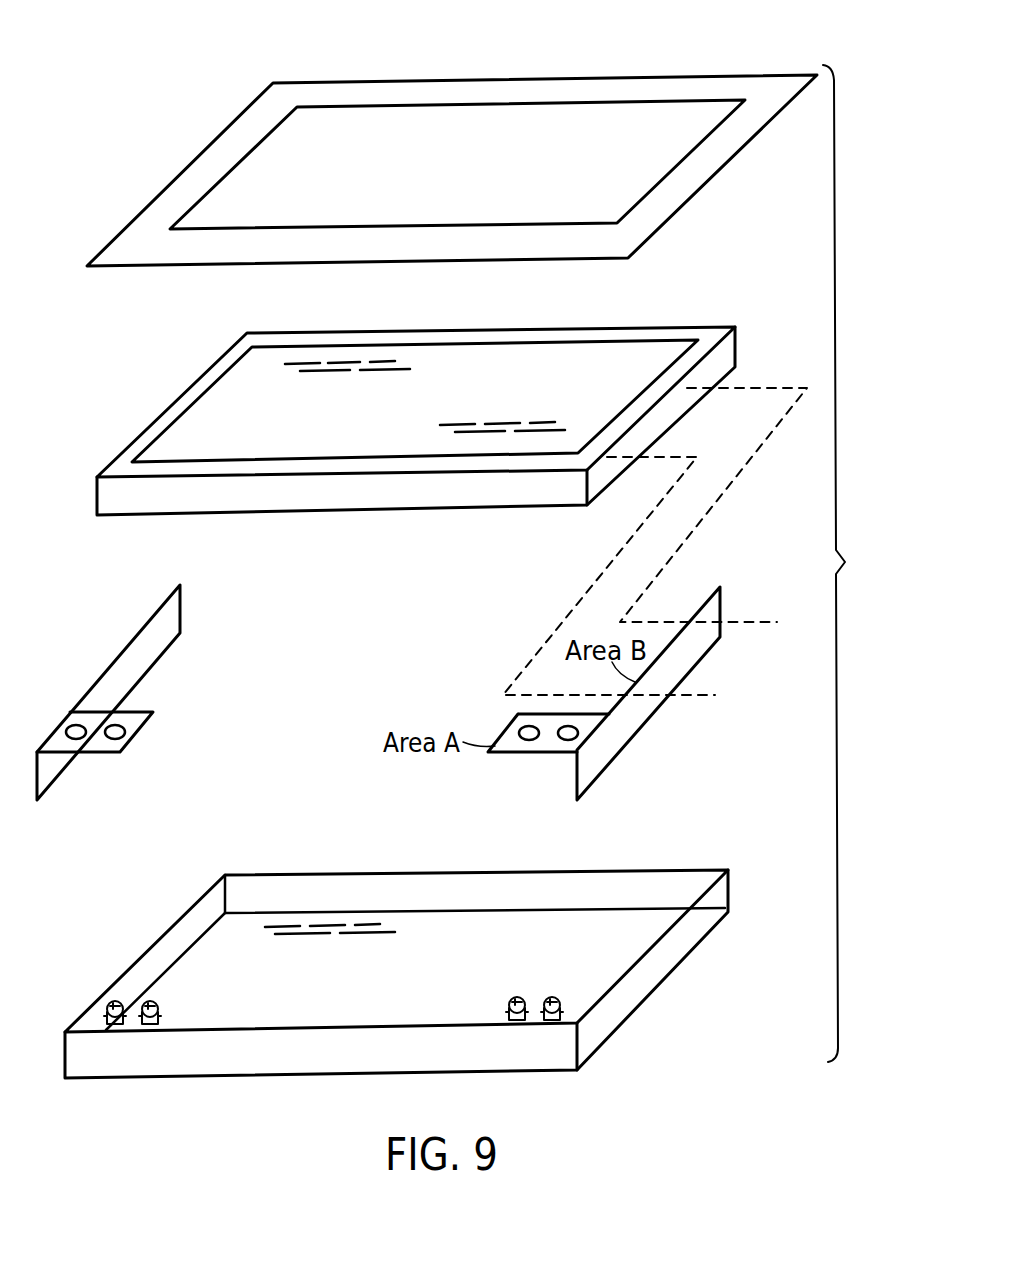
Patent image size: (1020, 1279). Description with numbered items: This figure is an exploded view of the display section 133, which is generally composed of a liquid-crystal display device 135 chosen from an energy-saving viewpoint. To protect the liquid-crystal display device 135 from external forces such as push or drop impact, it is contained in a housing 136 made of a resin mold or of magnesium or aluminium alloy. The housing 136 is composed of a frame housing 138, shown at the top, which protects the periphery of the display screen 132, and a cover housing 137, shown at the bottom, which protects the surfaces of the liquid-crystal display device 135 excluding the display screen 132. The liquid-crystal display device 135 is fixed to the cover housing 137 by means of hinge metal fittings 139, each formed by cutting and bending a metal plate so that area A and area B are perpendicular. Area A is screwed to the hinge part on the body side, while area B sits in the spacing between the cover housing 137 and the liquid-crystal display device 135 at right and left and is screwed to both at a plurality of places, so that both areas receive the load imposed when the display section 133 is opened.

The display screen 132 is at (416, 401).
The display section 133 is at (856, 563).
The liquid-crystal display device 135 is at (545, 357).
The housing 136 is at (441, 551).
The cover housing 137 is at (625, 1012).
The frame housing 138 is at (596, 76).
The hinge metal fittings 139 is at (108, 660).